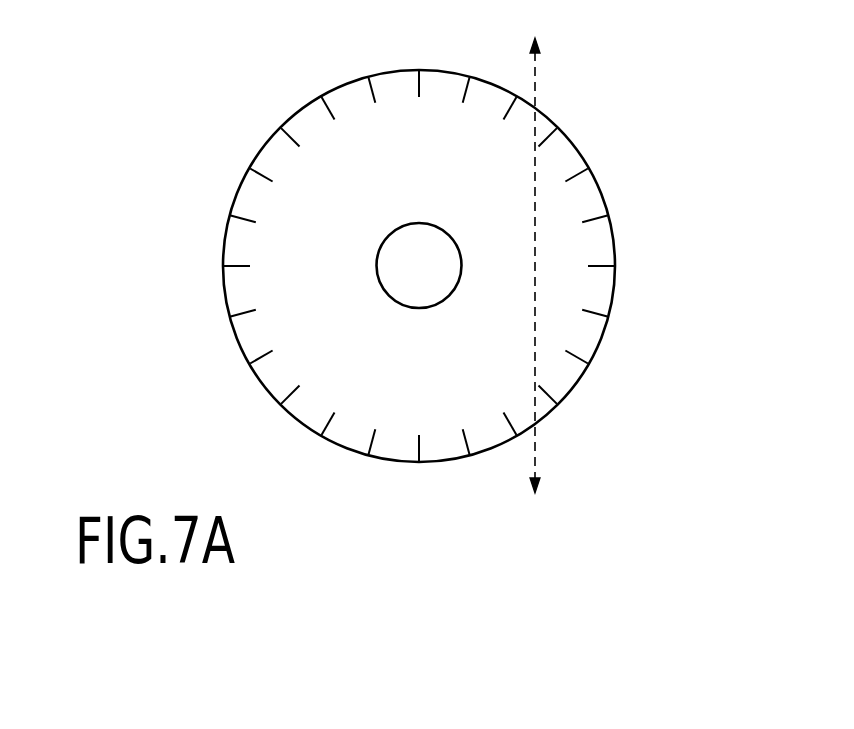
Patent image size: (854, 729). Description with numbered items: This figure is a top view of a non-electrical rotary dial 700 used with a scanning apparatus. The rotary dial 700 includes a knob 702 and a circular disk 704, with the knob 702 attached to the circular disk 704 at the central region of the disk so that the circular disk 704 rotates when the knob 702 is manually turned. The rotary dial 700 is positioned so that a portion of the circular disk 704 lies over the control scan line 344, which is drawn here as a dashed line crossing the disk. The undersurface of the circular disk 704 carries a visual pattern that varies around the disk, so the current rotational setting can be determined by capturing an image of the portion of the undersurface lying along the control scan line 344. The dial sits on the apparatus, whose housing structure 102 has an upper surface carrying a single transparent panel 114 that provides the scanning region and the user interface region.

The non-electrical rotary dial 700 is at (229, 93).
The knob 702 is at (419, 308).
The circular disk 704 is at (600, 350).
The control scan line 344 is at (537, 268).
The housing structure 102 is at (162, 267).
The transparent panel 114 is at (728, 266).